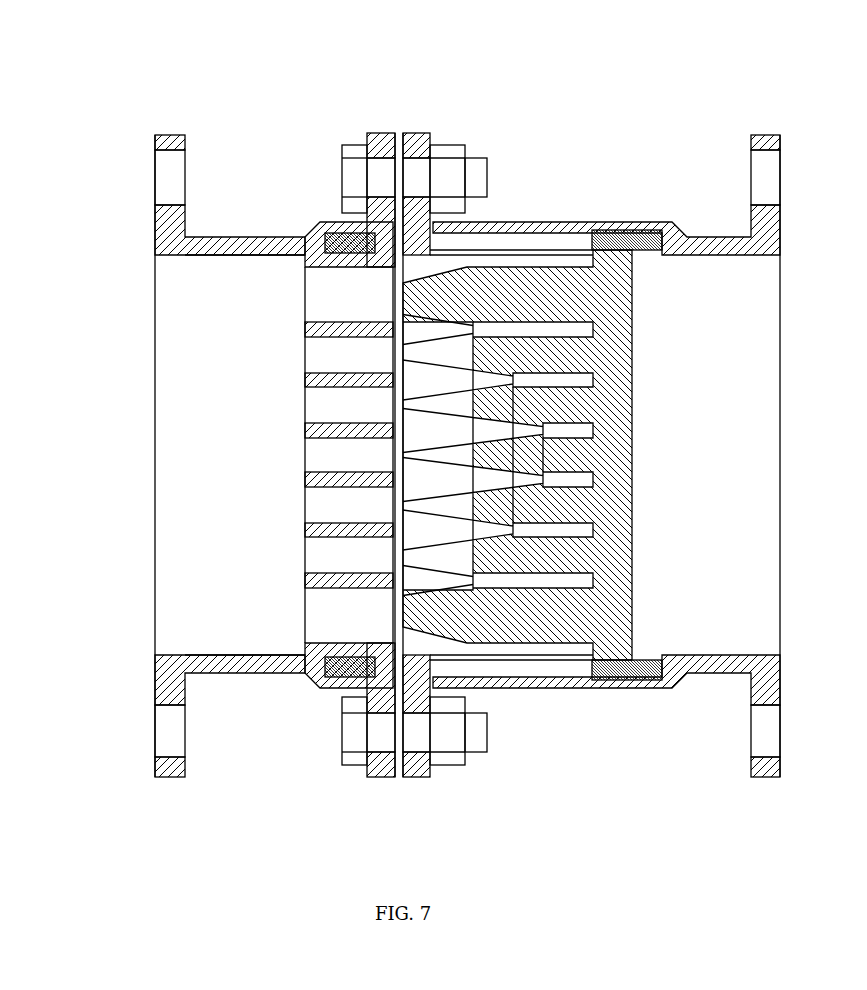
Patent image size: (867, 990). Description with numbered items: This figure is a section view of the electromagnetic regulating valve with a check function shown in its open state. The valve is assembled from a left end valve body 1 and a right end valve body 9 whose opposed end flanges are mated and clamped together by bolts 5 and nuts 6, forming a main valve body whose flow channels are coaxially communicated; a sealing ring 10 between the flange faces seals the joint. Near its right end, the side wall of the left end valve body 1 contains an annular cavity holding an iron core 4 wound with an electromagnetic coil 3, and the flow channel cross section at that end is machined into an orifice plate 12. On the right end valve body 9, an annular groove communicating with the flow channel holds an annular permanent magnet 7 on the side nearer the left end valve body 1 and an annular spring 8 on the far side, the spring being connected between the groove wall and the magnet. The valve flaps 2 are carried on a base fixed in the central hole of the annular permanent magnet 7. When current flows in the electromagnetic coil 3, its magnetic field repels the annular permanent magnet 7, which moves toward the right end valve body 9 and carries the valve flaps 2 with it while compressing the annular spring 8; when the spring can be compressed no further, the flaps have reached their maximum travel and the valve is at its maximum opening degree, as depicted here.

The left end valve body 1 is at (153, 213).
The valve flap 2 is at (295, 287).
The electromagnetic coil 3 is at (327, 223).
The iron core 4 is at (348, 233).
The bolt 5 is at (418, 175).
The nut 6 is at (450, 175).
The annular permanent magnet 7 is at (618, 230).
The annular spring 8 is at (640, 680).
The right end valve body 9 is at (500, 680).
The sealing ring 10 is at (400, 683).
The orifice plate 12 is at (270, 441).